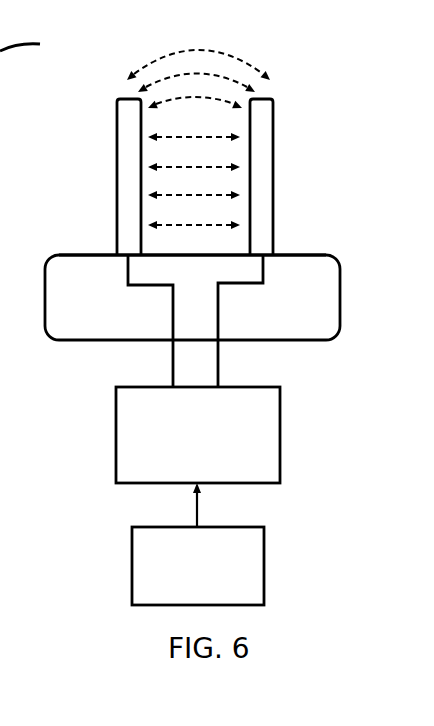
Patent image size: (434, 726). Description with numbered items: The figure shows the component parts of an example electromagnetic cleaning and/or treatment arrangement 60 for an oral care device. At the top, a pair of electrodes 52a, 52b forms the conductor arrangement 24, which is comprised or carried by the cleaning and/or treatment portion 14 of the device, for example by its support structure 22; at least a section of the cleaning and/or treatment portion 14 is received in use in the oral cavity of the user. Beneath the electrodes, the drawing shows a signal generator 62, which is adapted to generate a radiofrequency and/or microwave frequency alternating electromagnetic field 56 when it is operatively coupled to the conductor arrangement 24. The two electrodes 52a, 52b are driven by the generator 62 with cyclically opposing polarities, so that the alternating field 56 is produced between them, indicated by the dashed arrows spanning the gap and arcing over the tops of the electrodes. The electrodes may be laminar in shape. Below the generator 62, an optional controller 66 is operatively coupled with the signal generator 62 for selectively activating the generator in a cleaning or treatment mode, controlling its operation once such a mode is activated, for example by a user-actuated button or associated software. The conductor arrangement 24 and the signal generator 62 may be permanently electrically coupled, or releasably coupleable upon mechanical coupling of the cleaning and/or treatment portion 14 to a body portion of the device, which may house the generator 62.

The cleaning and/or treatment portion 14 is at (340, 292).
The support structure 22 is at (300, 252).
The conductor arrangement 24 is at (302, 105).
The electrode 52a is at (117, 152).
The electrode 52b is at (273, 152).
The alternating electromagnetic field 56 is at (251, 41).
The electromagnetic cleaning and/or treatment arrangement 60 is at (62, 405).
The signal generator 62 is at (280, 420).
The controller 66 is at (264, 556).